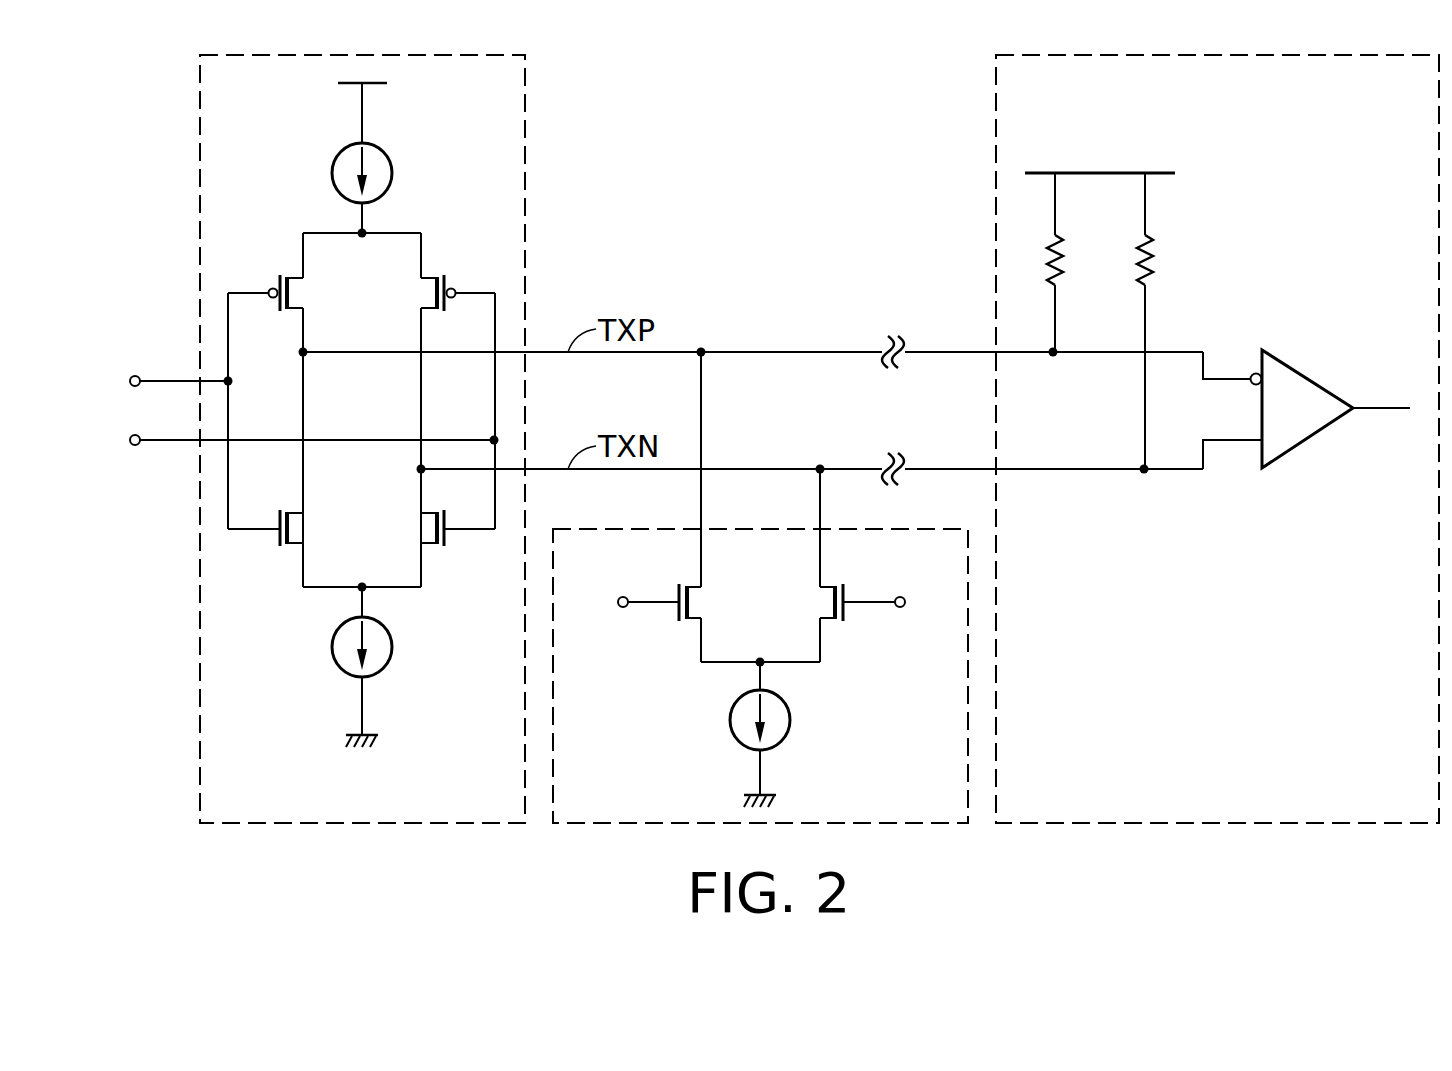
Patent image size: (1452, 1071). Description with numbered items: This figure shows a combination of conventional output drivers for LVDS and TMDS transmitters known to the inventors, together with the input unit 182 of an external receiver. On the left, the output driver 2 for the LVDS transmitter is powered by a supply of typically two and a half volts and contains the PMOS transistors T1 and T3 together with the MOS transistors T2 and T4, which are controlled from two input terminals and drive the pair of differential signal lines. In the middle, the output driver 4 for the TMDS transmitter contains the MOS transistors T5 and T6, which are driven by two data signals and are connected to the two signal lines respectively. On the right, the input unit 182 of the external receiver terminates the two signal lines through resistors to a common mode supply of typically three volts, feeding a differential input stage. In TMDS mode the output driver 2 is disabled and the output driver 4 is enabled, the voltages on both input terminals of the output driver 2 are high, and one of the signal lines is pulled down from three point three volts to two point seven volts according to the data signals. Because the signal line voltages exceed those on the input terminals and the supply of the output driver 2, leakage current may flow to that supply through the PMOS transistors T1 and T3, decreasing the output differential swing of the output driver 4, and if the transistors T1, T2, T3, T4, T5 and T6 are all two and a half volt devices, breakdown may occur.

The output driver for LVDS transmitter 2 is at (200, 169).
The output driver for TMDS transmitter 4 is at (580, 529).
The input unit 182 is at (996, 221).
The PMOS transistor T1 is at (285, 272).
The MOS transistor T2 is at (285, 528).
The PMOS transistor T3 is at (438, 272).
The MOS transistor T4 is at (438, 528).
The MOS transistor T5 is at (679, 507).
The MOS transistor T6 is at (842, 565).